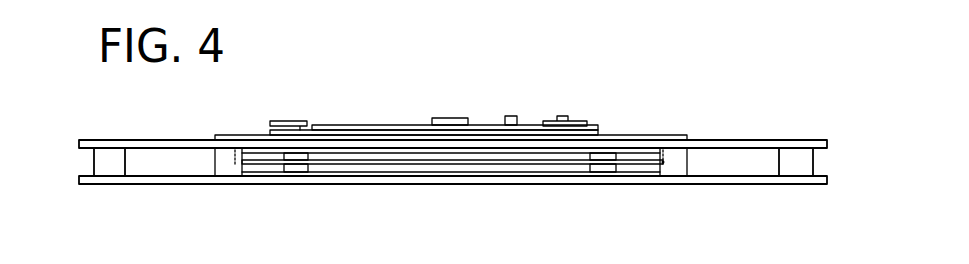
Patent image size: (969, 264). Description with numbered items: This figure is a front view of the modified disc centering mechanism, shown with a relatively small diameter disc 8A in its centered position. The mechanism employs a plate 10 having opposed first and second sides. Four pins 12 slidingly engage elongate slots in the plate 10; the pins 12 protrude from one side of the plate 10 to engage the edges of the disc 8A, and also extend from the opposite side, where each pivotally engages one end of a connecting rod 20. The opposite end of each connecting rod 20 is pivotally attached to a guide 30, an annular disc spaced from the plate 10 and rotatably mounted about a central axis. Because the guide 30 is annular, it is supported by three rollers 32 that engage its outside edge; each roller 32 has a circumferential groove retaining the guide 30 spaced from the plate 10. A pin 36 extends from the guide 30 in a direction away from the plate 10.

The plate 10 is at (707, 140).
The connecting rod 20 is at (242, 135).
The guide 30 is at (333, 123).
The rollers 32 is at (298, 121).
The pin 36 is at (512, 116).
The small diameter disc 8A is at (446, 164).
The pins 12 is at (228, 168).